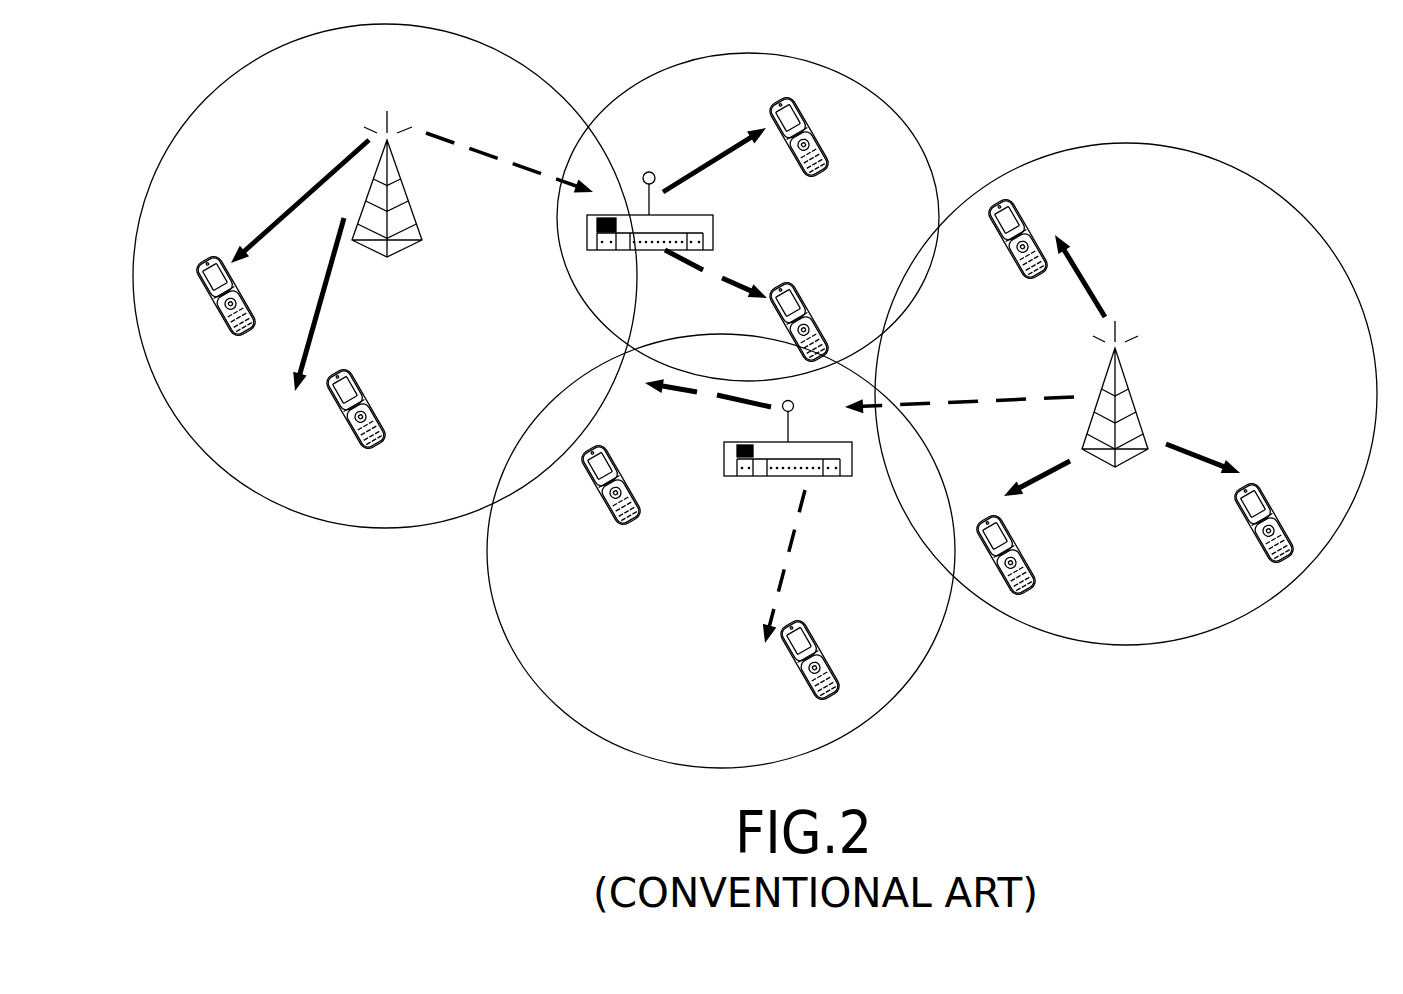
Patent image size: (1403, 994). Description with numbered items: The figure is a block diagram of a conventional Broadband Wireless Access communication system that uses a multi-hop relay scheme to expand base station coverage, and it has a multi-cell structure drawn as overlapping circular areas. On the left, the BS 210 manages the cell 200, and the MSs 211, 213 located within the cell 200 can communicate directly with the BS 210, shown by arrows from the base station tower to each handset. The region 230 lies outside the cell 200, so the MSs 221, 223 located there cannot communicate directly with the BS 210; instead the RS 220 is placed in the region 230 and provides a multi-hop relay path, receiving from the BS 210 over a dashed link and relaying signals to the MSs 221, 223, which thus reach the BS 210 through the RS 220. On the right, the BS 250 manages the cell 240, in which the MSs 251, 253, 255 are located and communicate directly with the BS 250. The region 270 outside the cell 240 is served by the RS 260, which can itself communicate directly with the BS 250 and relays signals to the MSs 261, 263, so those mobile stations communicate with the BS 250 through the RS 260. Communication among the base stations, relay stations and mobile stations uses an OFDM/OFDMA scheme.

The cell 200 is at (385, 276).
The BS 210 is at (410, 220).
The MS 211 is at (205, 257).
The MS 213 is at (338, 372).
The RS 220 is at (650, 251).
The MS 221 is at (803, 290).
The MS 223 is at (803, 106).
The region 230 is at (748, 217).
The cell 240 is at (1126, 394).
The BS 250 is at (1138, 430).
The MS 251 is at (1003, 200).
The MS 253 is at (1250, 484).
The MS 255 is at (1030, 576).
The RS 260 is at (745, 477).
The MS 261 is at (595, 446).
The MS 263 is at (796, 621).
The region 270 is at (721, 551).